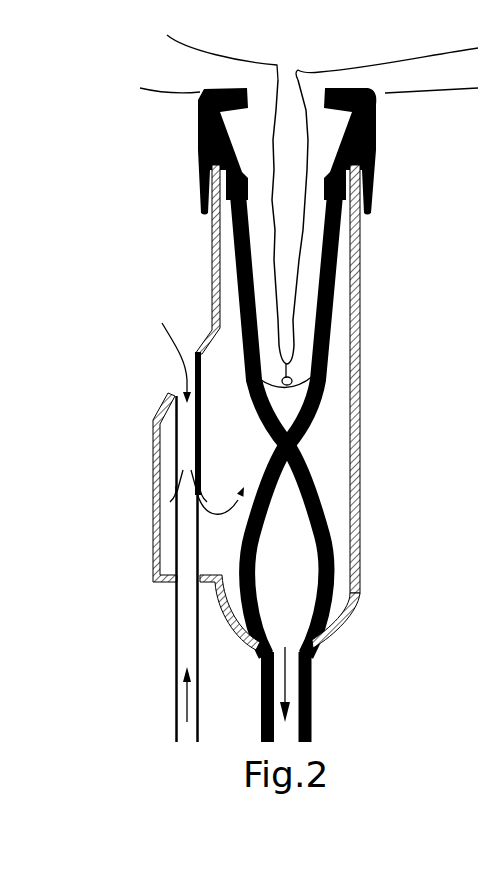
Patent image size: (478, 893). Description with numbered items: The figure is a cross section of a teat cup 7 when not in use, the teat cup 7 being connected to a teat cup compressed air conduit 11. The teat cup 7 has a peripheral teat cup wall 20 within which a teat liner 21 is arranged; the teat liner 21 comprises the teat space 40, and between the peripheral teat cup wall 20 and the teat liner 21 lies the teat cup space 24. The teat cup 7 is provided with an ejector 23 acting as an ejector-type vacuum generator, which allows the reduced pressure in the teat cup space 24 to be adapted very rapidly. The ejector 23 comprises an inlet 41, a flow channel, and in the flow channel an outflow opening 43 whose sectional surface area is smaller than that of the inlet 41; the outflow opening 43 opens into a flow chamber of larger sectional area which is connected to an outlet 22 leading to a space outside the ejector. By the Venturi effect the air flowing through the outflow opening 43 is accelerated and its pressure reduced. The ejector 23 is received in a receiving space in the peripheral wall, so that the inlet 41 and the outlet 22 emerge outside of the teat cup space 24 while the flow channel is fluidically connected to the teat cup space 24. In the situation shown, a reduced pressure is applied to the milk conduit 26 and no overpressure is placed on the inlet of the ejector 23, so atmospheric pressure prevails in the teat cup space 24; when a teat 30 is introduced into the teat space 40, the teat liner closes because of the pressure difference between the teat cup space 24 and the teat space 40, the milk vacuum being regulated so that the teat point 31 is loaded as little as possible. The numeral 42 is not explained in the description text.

The teat cup 7 is at (153, 266).
The teat cup compressed air conduit 11 is at (178, 625).
The peripheral teat cup wall 20 is at (357, 292).
The teat liner 21 is at (333, 250).
The outlet 22 is at (182, 389).
The ejector 23 is at (162, 478).
The teat cup space 24 is at (340, 333).
The milk conduit 26 is at (310, 692).
The teat 30 is at (312, 272).
The teat point 31 is at (292, 394).
The teat space 40 is at (300, 407).
The inlet 41 is at (185, 528).
The nozzle wall 42 is at (183, 493).
The outflow opening 43 is at (178, 500).